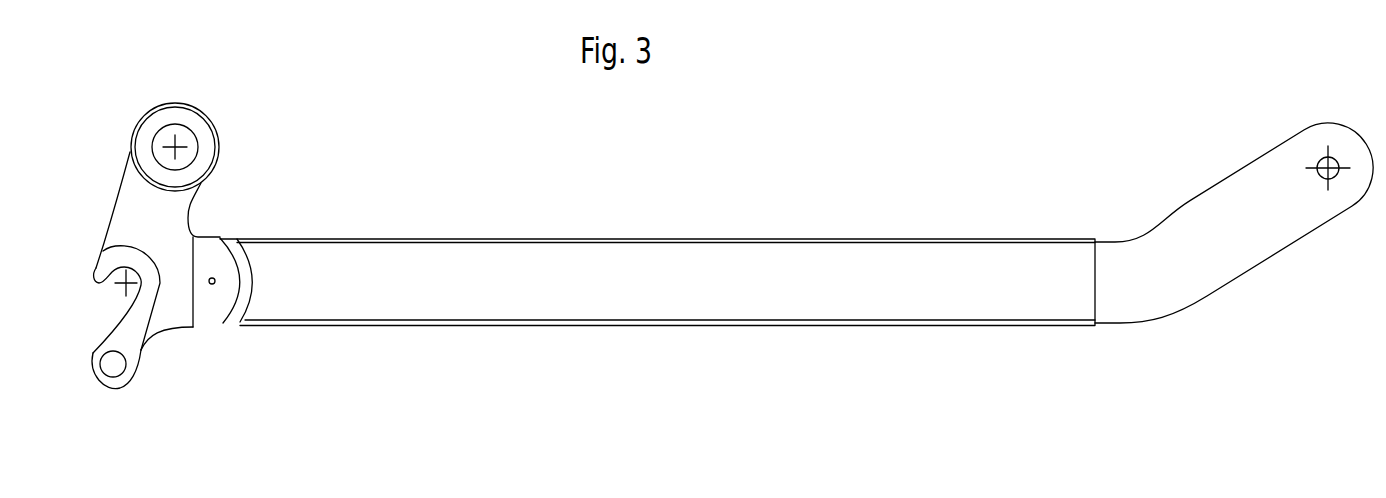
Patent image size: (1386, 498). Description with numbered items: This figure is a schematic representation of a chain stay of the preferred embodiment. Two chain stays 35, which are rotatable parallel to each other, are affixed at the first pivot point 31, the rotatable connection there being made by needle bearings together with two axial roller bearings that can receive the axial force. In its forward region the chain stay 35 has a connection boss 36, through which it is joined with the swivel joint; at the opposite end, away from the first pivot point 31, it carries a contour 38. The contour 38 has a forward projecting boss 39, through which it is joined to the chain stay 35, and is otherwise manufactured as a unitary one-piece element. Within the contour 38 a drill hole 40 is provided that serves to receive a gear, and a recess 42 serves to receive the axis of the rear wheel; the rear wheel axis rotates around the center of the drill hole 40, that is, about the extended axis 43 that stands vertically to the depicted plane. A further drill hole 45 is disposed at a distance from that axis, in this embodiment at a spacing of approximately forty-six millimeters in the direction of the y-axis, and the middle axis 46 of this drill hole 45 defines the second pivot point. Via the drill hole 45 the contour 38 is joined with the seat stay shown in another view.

The first pivot point 31 is at (1320, 160).
The chain stay 35 is at (585, 312).
The connection boss 36 is at (1195, 290).
The contour 38 is at (112, 187).
The forward projecting boss 39 is at (224, 264).
The drill hole 40 is at (112, 374).
The recess 42 is at (112, 273).
The extended axis 43 is at (123, 287).
The drill hole 45 is at (189, 135).
The middle axis 46 is at (181, 148).